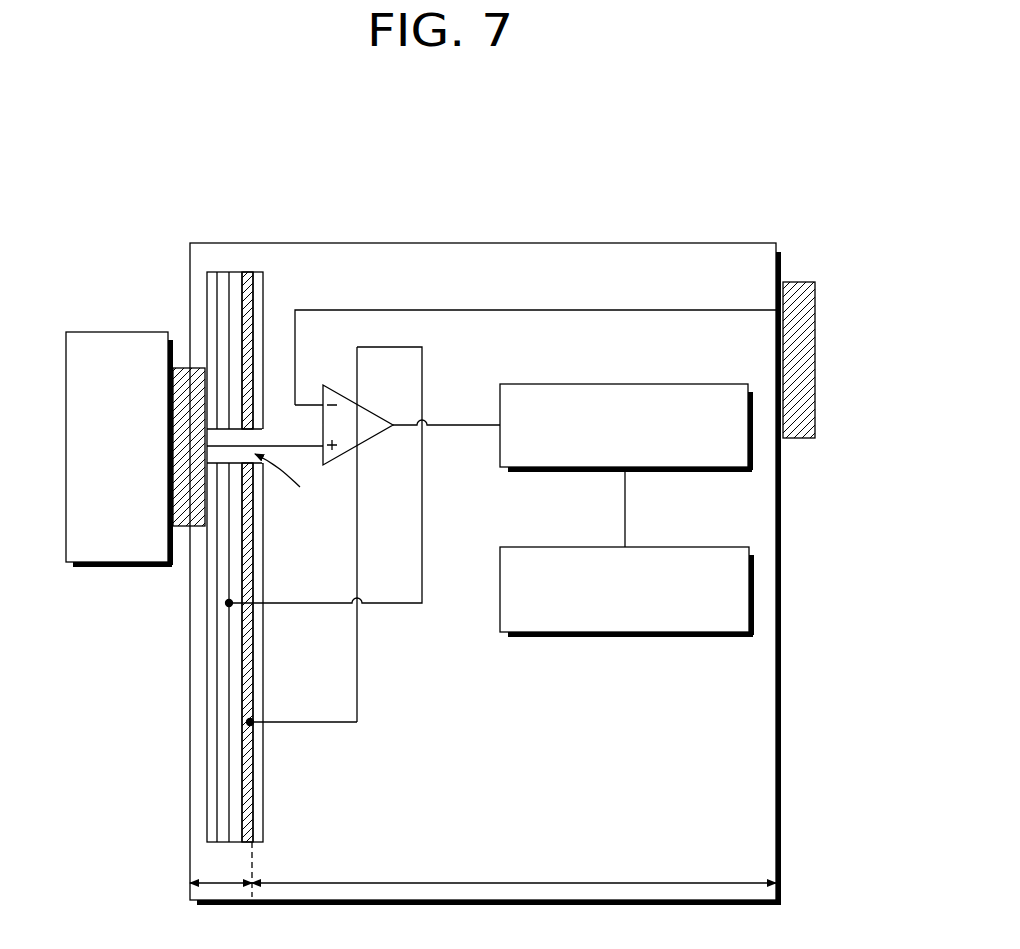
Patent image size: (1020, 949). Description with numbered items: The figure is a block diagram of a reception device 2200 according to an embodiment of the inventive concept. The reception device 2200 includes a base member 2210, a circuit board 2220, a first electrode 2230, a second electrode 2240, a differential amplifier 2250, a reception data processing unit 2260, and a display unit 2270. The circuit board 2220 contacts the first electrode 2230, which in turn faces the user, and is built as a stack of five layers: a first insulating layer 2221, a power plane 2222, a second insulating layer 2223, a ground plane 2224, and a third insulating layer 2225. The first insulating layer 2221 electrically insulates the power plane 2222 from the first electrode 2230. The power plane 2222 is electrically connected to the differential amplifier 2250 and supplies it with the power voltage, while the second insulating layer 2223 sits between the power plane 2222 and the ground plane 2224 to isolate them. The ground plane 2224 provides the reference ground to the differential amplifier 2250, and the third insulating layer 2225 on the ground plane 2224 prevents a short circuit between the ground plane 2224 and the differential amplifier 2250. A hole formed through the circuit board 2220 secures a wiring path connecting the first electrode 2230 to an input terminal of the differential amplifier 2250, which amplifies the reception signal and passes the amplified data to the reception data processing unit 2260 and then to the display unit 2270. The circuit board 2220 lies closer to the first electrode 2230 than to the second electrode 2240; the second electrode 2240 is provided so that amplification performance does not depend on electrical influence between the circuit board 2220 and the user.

The reception device 2200 is at (691, 158).
The base member 2210 is at (722, 243).
The circuit board 2220 is at (93, 670).
The first insulating layer 2221 is at (213, 682).
The power plane 2222 is at (225, 710).
The second insulating layer 2223 is at (238, 740).
The ground plane 2224 is at (247, 773).
The third insulating layer 2225 is at (258, 803).
The first electrode 2230 is at (185, 367).
The second electrode 2240 is at (816, 362).
The differential amplifier 2250 is at (369, 442).
The reception data processing unit 2260 is at (705, 383).
The display unit 2270 is at (705, 546).